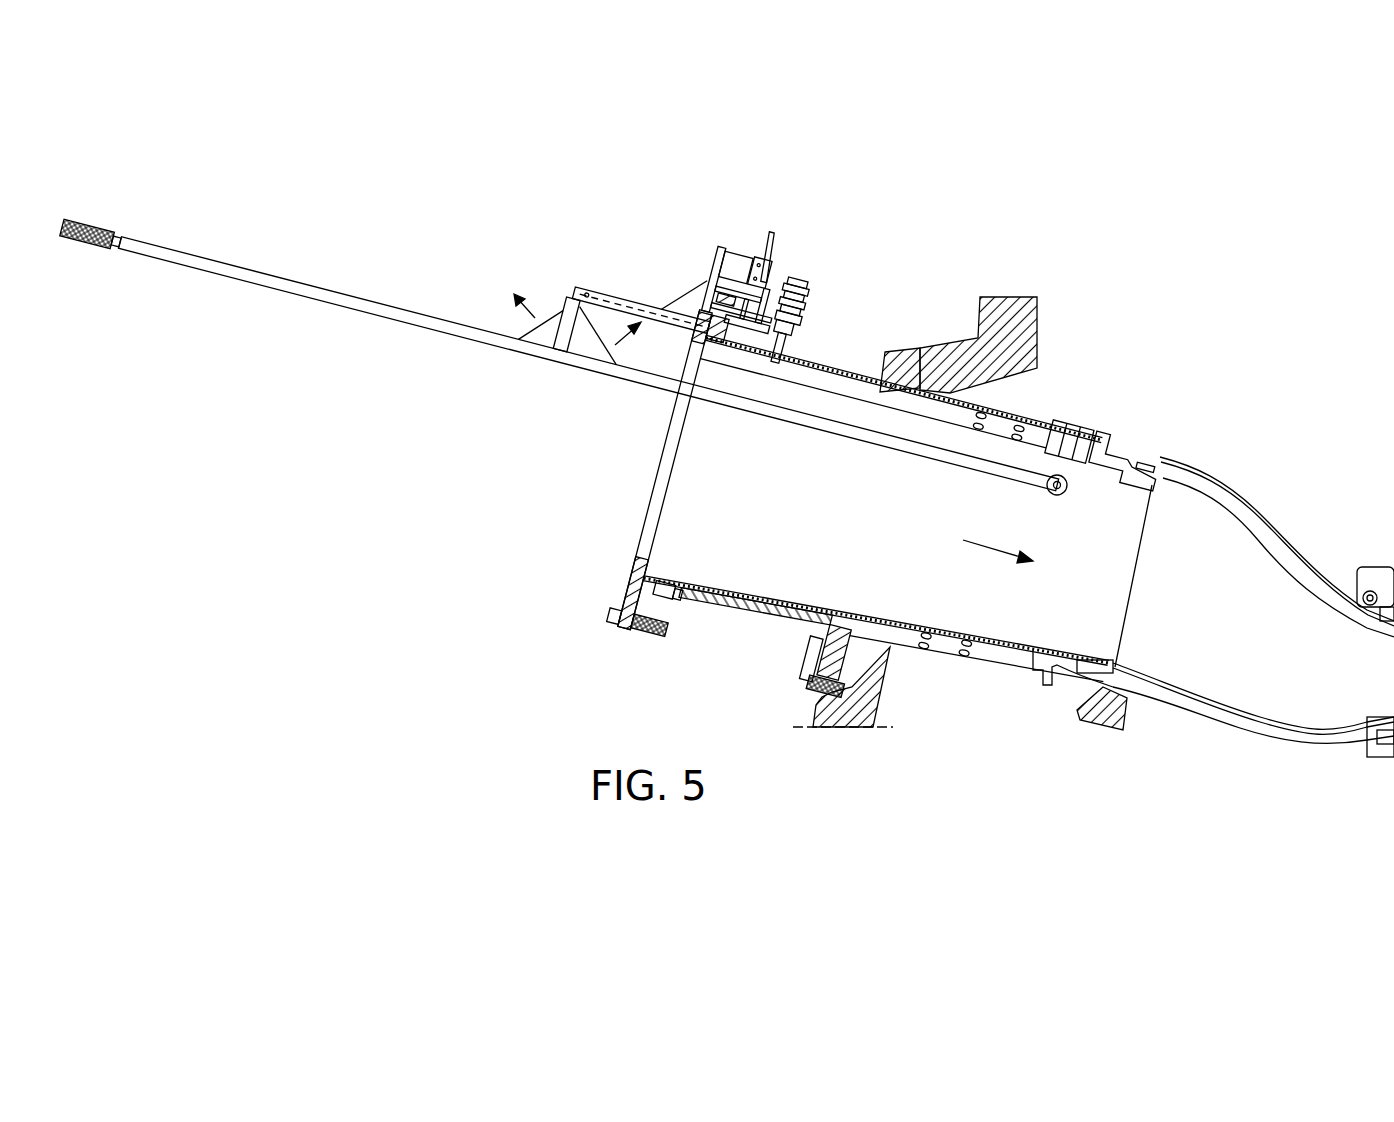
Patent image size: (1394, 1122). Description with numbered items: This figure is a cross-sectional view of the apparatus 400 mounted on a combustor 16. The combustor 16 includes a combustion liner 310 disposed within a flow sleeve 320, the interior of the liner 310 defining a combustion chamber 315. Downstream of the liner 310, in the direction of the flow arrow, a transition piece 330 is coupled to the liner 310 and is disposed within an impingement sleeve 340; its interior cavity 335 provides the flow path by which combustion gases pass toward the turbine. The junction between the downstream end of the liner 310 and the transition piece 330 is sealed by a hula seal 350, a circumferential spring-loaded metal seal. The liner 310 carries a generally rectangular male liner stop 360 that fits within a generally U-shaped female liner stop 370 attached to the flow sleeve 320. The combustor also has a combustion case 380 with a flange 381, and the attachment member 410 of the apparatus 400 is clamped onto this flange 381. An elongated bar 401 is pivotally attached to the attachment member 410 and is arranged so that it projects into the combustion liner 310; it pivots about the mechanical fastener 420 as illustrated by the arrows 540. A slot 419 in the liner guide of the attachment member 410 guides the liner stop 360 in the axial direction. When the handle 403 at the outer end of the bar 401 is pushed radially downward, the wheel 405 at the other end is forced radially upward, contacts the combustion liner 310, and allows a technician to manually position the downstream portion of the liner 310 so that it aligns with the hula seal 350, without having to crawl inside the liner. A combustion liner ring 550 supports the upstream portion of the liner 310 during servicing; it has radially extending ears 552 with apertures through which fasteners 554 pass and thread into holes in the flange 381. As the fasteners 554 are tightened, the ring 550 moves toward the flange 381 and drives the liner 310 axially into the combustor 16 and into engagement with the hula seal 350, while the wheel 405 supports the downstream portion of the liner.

The combustor 16 is at (1015, 527).
The combustion liner 310 is at (833, 375).
The combustion chamber 315 is at (872, 530).
The flow sleeve 320 is at (1040, 428).
The transition piece 330 is at (1283, 570).
The interior cavity 335 is at (1244, 644).
The impingement sleeve 340 is at (1238, 488).
The hula seal 350 is at (1137, 455).
The male liner stop 360 is at (668, 578).
The female liner stop 370 is at (697, 596).
The combustion case 380 is at (806, 330).
The flange 381 is at (644, 640).
The apparatus 400 is at (590, 367).
The elongated bar 401 is at (450, 342).
The handle 403 is at (93, 229).
The wheel 405 is at (1062, 497).
The attachment member 410 is at (764, 208).
The slot 419 is at (628, 305).
The mechanical fastener 420 is at (591, 287).
The arrows 540 is at (535, 318).
The combustion liner ring 550 is at (650, 503).
The ears 552 is at (627, 632).
The fasteners 554 is at (615, 617).